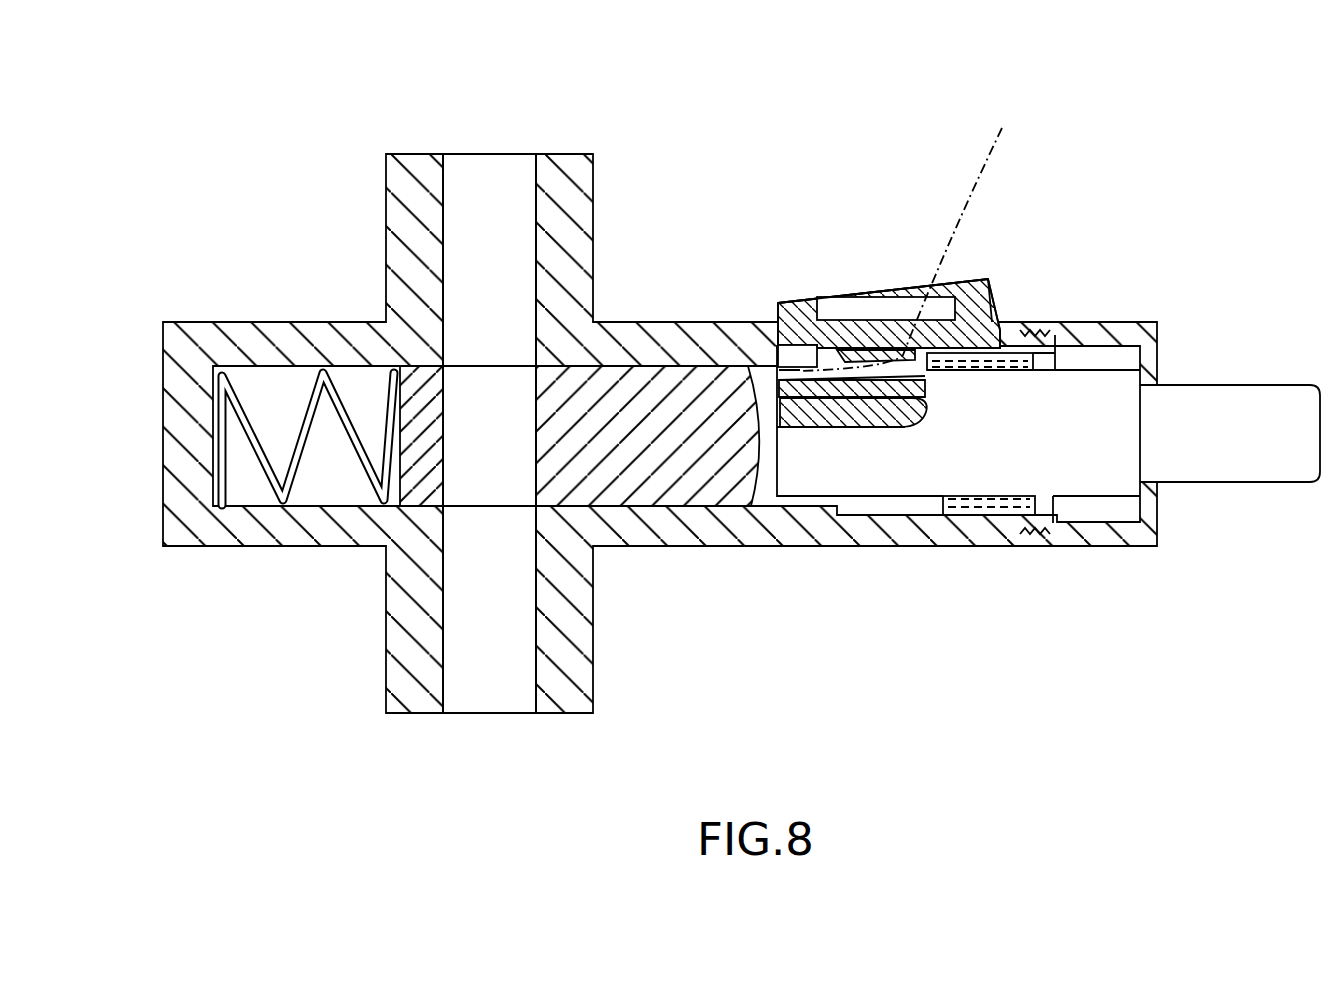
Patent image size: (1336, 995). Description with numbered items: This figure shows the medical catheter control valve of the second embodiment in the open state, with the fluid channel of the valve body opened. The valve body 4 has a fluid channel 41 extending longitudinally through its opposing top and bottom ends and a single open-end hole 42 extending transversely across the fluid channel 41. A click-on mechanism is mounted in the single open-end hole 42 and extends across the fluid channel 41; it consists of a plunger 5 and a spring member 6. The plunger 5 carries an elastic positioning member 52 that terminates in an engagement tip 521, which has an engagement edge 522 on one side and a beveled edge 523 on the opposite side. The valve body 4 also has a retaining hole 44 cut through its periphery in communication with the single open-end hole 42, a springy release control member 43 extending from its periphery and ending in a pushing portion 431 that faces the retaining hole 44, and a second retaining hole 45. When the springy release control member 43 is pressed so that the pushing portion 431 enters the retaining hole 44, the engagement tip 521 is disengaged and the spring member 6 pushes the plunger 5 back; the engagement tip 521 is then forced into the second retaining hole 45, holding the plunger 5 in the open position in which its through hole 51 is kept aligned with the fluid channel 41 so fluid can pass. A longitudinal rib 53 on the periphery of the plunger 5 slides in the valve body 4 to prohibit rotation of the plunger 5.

The valve body 4 is at (566, 202).
The fluid channel 41 is at (487, 190).
The single open-end hole 42 is at (655, 492).
The springy release control member 43 is at (913, 300).
The pushing portion 431 is at (806, 303).
The retaining hole 44 is at (783, 345).
The second retaining hole 45 is at (1102, 603).
The plunger 5 is at (600, 487).
The through hole 51 is at (490, 413).
The elastic positioning member 52 is at (841, 428).
The engagement tip 521 is at (910, 428).
The engagement edge 522 is at (988, 279).
The beveled edge 523 is at (780, 364).
The longitudinal rib 53 is at (1027, 353).
The spring member 6 is at (220, 403).